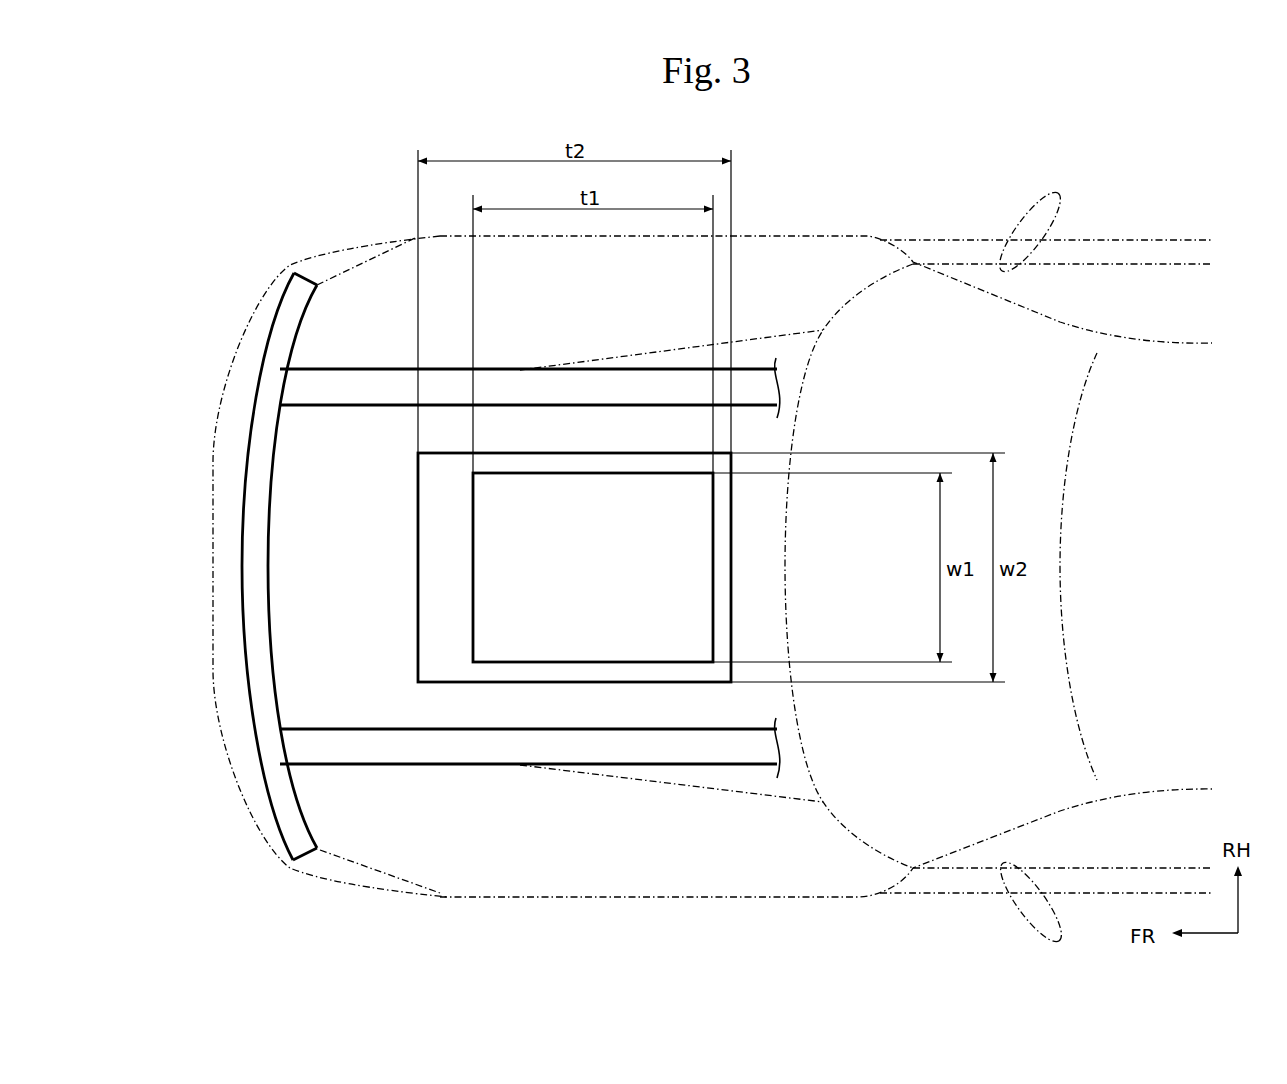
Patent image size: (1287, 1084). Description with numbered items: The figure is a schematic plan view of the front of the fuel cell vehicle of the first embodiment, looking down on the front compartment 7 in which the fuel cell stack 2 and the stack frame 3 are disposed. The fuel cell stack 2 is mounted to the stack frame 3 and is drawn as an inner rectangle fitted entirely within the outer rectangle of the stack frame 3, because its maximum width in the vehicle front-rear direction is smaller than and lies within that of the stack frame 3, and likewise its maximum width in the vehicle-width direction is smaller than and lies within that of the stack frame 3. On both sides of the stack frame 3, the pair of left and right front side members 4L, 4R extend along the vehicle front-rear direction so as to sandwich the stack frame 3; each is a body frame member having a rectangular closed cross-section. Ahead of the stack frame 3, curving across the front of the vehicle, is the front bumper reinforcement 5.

The fuel cell stack 2 is at (510, 522).
The stack frame 3 is at (440, 577).
The right front side member 4R is at (372, 390).
The left front side member 4L is at (373, 747).
The front bumper reinforcement 5 is at (245, 577).
The front compartment 7 is at (345, 655).